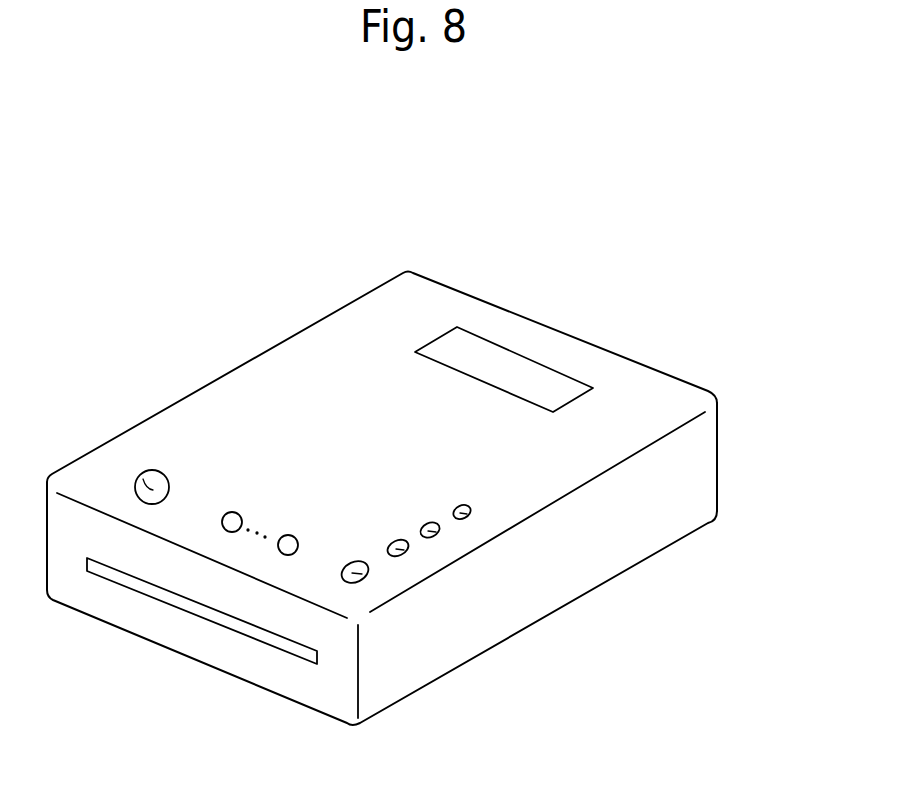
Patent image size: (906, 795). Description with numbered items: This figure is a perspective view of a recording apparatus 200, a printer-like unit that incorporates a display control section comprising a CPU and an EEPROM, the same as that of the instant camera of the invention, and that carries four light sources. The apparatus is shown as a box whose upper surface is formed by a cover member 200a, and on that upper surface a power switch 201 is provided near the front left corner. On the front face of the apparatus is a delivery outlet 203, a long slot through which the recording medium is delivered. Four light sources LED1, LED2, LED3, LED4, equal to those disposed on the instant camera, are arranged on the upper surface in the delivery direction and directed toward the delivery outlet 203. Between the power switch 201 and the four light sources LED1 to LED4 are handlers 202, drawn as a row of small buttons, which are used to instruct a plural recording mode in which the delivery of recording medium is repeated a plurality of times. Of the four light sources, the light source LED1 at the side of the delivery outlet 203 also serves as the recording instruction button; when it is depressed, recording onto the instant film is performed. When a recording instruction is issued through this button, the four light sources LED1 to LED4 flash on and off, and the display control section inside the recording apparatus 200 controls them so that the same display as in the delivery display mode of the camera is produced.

The recording apparatus 200 is at (423, 207).
The cover member 200a is at (692, 517).
The power switch 201 is at (143, 474).
The handlers 202 is at (315, 542).
The delivery outlet 203 is at (200, 612).
The light source LED1 is at (367, 576).
The light source LED2 is at (408, 552).
The light source LED3 is at (440, 532).
The light source LED4 is at (471, 514).